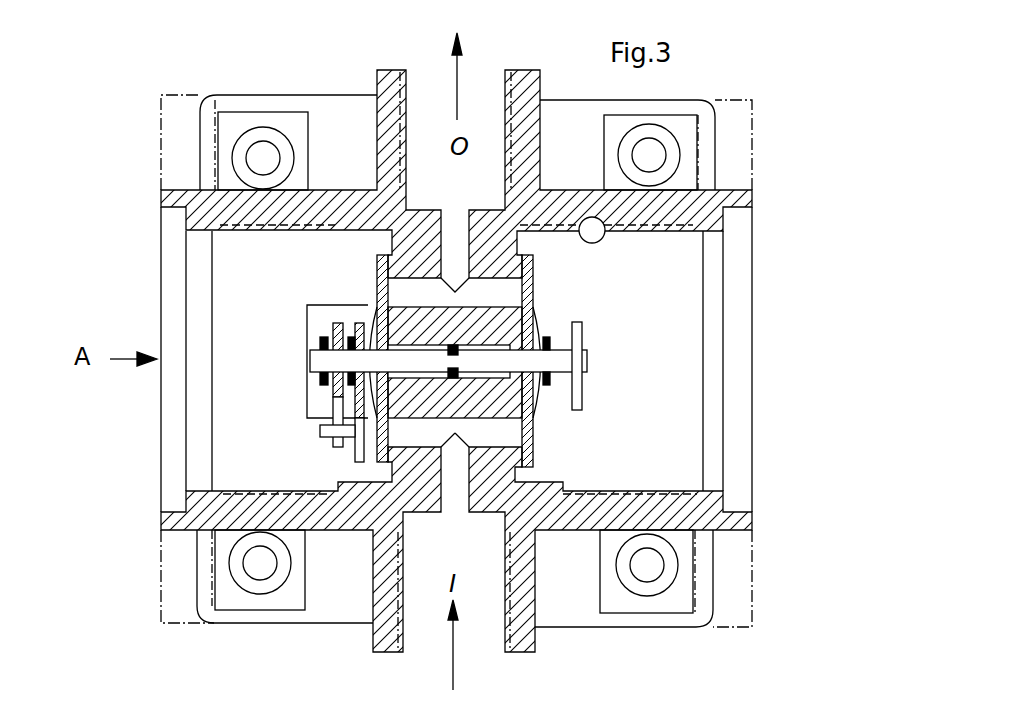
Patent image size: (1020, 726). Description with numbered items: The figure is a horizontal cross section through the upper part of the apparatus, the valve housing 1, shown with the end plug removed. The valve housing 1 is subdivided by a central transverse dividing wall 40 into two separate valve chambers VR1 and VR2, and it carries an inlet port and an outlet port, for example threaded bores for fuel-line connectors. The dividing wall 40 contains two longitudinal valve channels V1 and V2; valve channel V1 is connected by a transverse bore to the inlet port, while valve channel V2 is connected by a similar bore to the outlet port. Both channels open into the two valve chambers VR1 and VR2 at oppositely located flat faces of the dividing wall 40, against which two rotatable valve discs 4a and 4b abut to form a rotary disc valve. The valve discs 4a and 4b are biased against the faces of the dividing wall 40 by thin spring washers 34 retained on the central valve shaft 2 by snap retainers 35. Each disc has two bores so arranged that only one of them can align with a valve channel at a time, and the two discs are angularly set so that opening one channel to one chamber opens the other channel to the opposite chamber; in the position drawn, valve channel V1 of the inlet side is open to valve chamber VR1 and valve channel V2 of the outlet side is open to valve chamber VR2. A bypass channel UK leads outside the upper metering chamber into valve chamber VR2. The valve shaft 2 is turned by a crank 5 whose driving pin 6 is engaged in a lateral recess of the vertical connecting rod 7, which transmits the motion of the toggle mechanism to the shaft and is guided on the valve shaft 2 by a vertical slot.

The valve housing 1 is at (740, 525).
The valve shaft 2 is at (563, 362).
The rotatable valve disc 4a is at (337, 482).
The rotatable valve disc 4b is at (563, 482).
The crank 5 is at (353, 453).
The driving pin 6 is at (323, 427).
The connecting rod 7 is at (332, 332).
The spring washer 34 is at (542, 332).
The snap retainer 35 is at (545, 383).
The dividing wall 40 is at (410, 238).
The bypass channel UK is at (593, 243).
The valve channel V1 is at (508, 432).
The valve channel V2 is at (497, 296).
The valve chamber VR1 is at (261, 350).
The valve chamber VR2 is at (641, 355).